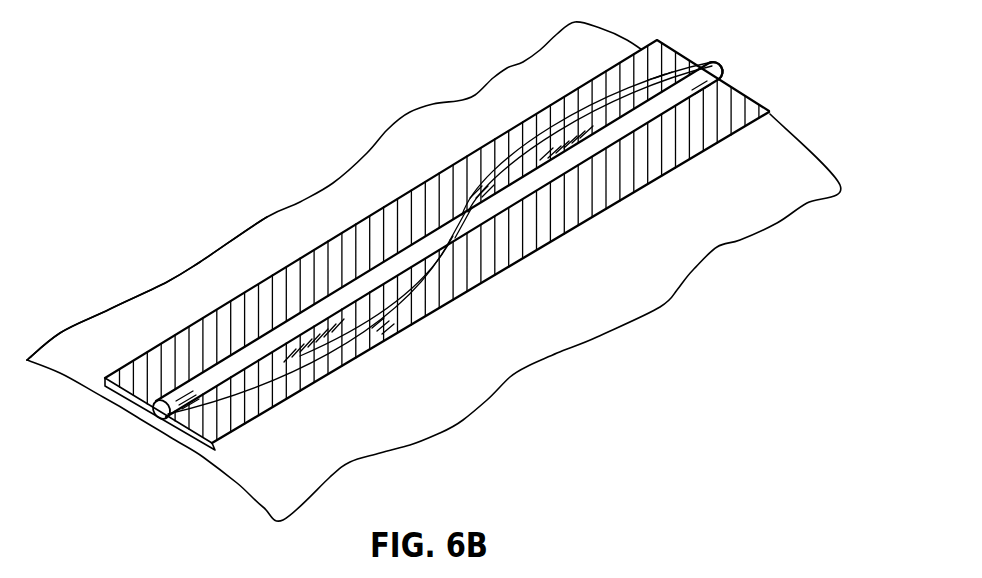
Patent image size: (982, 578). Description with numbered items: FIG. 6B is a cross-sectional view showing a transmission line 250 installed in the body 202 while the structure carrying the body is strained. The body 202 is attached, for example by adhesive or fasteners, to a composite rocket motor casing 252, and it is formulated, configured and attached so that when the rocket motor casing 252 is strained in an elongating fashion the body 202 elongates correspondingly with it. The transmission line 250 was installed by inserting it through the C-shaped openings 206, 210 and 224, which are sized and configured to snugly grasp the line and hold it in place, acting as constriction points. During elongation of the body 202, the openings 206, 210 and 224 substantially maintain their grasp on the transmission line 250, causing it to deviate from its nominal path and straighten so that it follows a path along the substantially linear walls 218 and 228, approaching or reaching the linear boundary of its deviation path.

The body 202 is at (427, 177).
The C-shaped opening 206 is at (172, 418).
The C-shaped opening 210 is at (719, 78).
The substantially linear wall 218 is at (326, 288).
The C-shaped opening 224 is at (455, 243).
The substantially linear wall 228 is at (614, 165).
The transmission line 250 is at (540, 153).
The composite rocket motor casing 252 is at (191, 288).